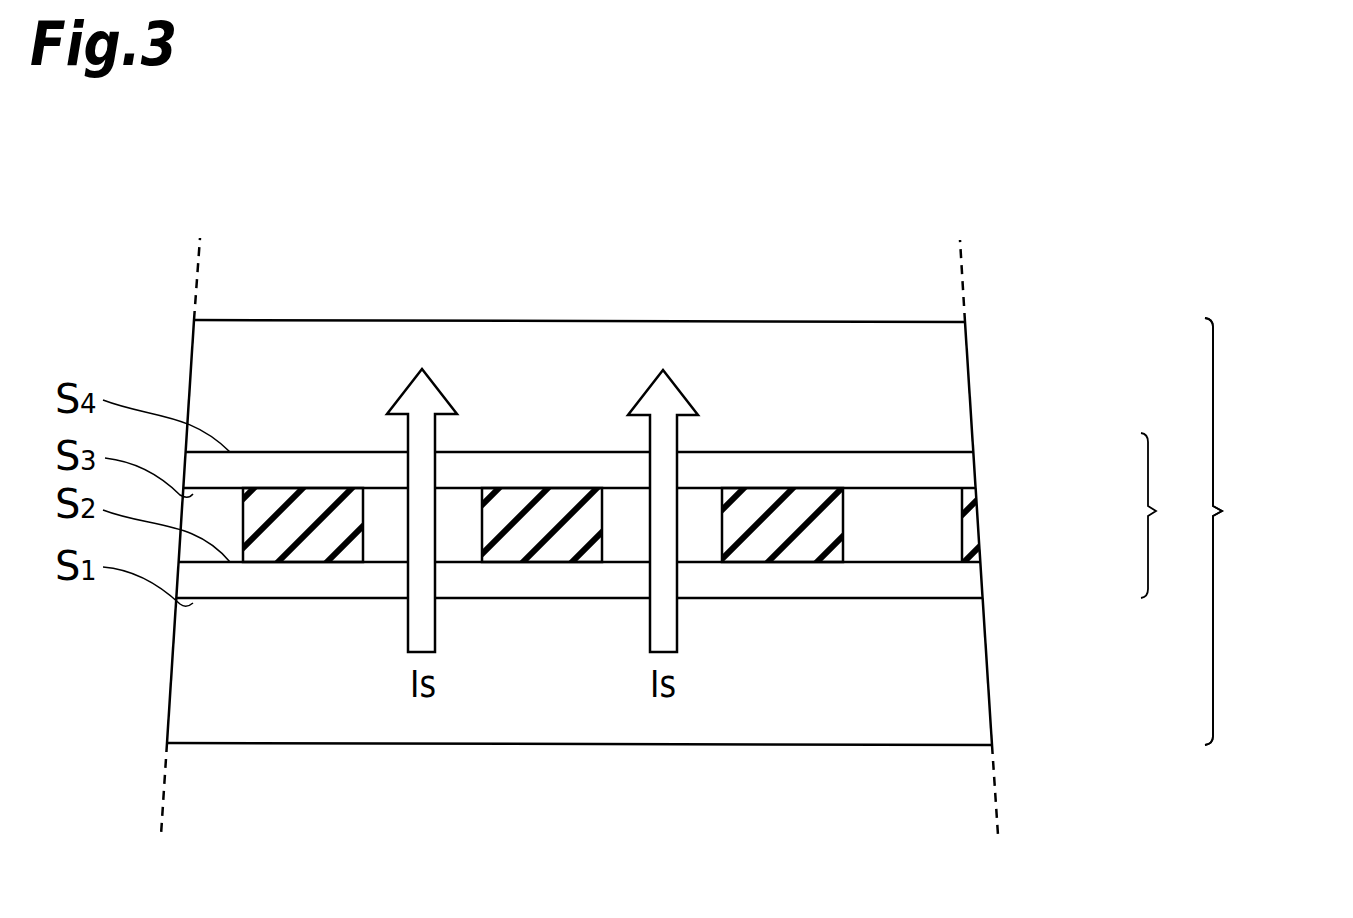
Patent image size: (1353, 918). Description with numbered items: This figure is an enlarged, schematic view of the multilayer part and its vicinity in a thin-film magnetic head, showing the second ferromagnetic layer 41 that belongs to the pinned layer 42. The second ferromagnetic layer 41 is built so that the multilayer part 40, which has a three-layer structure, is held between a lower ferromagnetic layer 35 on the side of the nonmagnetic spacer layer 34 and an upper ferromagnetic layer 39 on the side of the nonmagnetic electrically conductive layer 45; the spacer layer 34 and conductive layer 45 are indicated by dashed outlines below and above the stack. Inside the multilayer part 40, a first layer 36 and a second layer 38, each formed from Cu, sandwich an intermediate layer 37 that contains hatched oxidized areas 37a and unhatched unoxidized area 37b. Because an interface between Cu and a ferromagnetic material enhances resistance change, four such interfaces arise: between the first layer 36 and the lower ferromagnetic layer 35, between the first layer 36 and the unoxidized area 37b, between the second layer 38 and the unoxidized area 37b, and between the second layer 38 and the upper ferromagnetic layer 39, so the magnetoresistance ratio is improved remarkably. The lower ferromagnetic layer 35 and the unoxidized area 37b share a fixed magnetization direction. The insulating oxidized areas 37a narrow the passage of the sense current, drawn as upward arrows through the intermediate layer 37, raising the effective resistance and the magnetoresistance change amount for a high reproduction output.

The nonmagnetic spacer layer 34 is at (996, 788).
The lower ferromagnetic layer 35 is at (990, 672).
The first layer 36 is at (983, 583).
The intermediate layer 37 is at (651, 372).
The oxidized areas 37a is at (272, 500).
The unoxidized area 37b is at (385, 500).
The second layer 38 is at (975, 472).
The upper ferromagnetic layer 39 is at (968, 375).
The multilayer part 40 is at (1173, 515).
The second ferromagnetic layer 41 is at (1271, 531).
The pinned layer 42 is at (1271, 531).
The nonmagnetic electrically conductive layer 45 is at (963, 280).